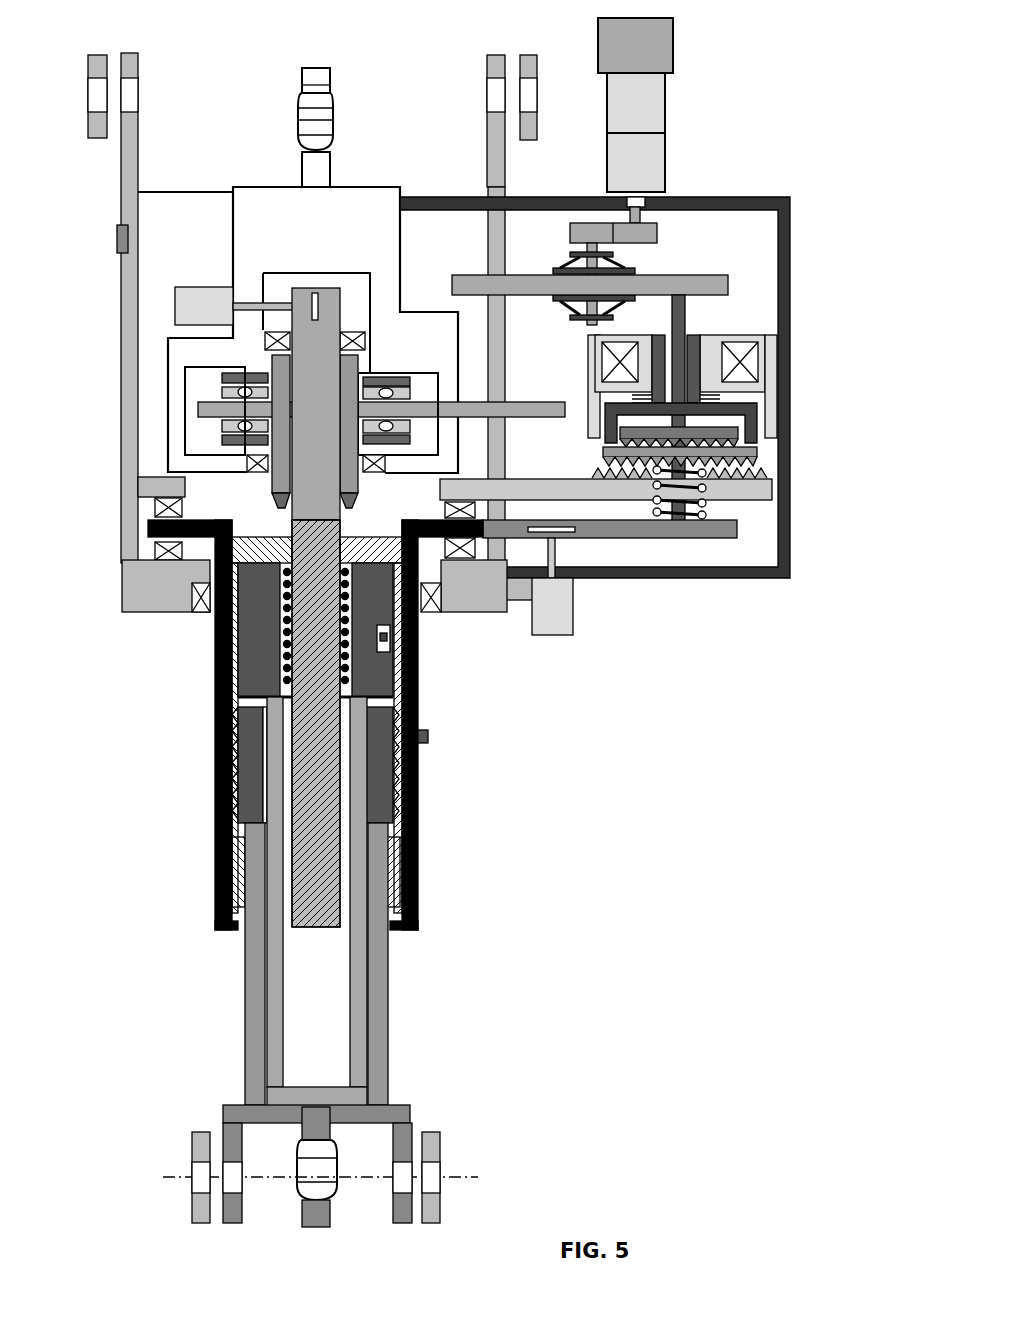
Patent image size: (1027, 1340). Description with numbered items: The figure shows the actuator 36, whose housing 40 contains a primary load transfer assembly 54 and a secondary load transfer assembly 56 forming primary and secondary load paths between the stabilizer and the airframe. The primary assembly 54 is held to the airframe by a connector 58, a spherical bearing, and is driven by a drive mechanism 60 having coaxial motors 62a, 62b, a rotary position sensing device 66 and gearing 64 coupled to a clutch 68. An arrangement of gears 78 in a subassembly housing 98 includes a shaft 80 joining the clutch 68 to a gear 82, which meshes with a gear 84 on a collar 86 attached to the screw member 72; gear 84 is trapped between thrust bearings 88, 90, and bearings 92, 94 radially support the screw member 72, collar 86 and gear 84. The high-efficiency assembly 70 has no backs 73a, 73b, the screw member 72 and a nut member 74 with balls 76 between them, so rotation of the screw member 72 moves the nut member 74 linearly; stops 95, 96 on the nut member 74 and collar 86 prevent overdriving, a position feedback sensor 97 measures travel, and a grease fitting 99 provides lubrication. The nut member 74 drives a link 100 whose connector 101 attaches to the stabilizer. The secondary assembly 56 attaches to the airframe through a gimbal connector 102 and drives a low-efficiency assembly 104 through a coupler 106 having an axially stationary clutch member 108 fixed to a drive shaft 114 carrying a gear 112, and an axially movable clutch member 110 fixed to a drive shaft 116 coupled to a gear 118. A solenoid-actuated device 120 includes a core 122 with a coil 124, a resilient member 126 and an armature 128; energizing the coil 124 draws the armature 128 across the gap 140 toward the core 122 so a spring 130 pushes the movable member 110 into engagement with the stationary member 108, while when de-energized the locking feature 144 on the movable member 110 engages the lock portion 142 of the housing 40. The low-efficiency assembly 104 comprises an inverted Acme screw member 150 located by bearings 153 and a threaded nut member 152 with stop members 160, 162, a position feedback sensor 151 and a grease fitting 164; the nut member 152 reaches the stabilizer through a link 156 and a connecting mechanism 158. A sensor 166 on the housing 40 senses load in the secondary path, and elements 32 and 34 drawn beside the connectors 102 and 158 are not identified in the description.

The tubular guide 32 is at (92, 70).
The lower guide 34 is at (196, 1145).
The actuator 36 is at (233, 30).
The housing 40 is at (128, 290).
The primary load transfer assembly 54 is at (78, 325).
The secondary load transfer assembly 56 is at (782, 610).
The connector 58 is at (292, 100).
The drive mechanism 60 is at (724, 62).
The motor 62a is at (660, 115).
The motor 62b is at (660, 160).
The gearing 64 is at (655, 237).
The rotary position sensing device 66 is at (672, 42).
The clutch 68 is at (570, 255).
The high-efficiency assembly 70 is at (213, 538).
The screw member 72 is at (302, 713).
The no back 73a is at (225, 393).
The no back 73b is at (225, 427).
The nut member 74 is at (247, 662).
The balls 76 is at (277, 673).
The arrangement of gears 78 is at (437, 255).
The shaft 80 is at (505, 322).
The gear 82 is at (506, 408).
The gear 84 is at (418, 410).
The collar 86 is at (360, 357).
The thrust bearing 88 is at (226, 380).
The thrust bearing 90 is at (223, 437).
The bearing 92 is at (246, 500).
The bearing 94 is at (267, 340).
The stop 95 is at (358, 553).
The stop 96 is at (352, 503).
The position feedback sensor 97 is at (210, 290).
The subassembly housing 98 is at (252, 187).
The grease fitting 99 is at (390, 637).
The link 100 is at (357, 975).
The connector 101 is at (300, 1235).
The connector 102 is at (113, 40).
The low-efficiency assembly 104 is at (523, 700).
The coupler 106 is at (745, 333).
The axially stationary clutch member 108 is at (730, 432).
The axially movable clutch member 110 is at (745, 450).
The gear 112 is at (702, 275).
The drive shaft 114 is at (732, 320).
The drive shaft 116 is at (680, 532).
The gear 118 is at (705, 532).
The coil housing 120 is at (768, 337).
The solenoid core 122 is at (763, 340).
The coil 124 is at (740, 362).
The resilient member 126 is at (727, 398).
The armature 128 is at (660, 381).
The resilient member 130 is at (713, 510).
The gap 140 is at (758, 412).
The lock portion 142 is at (620, 480).
The locking feature 144 is at (615, 462).
The screw member 150 is at (418, 778).
The position feedback sensor 151 is at (550, 622).
The threaded nut member 152 is at (418, 812).
The bearings 153 is at (155, 550).
The link 156 is at (380, 1040).
The connecting mechanism 158 is at (222, 1225).
The stop member 160 is at (215, 843).
The stop member 162 is at (215, 925).
The grease fitting 164 is at (428, 738).
The sensor 166 is at (118, 238).